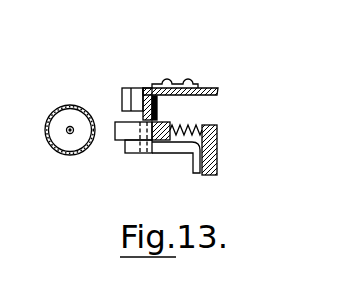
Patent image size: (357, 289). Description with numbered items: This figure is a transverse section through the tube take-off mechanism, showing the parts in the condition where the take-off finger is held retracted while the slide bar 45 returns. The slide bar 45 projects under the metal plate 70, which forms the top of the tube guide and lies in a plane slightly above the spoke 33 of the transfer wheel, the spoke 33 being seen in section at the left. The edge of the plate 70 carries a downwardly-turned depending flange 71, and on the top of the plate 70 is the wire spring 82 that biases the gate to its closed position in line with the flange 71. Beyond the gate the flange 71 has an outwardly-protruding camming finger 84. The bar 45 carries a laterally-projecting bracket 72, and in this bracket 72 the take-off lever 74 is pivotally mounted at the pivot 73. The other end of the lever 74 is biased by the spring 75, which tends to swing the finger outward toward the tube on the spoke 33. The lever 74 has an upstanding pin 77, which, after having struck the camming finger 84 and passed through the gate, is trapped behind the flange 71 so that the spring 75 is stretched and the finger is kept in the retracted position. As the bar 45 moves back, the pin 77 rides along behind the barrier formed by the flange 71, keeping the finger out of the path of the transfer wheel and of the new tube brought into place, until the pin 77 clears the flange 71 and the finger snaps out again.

The spoke 33 is at (67, 133).
The depending flange 71 is at (145, 117).
The camming finger 84 is at (125, 88).
The plate 70 is at (212, 88).
The wire spring 82 is at (183, 83).
The pin 77 is at (157, 108).
The take-off lever 74 is at (119, 138).
The pivot 73 is at (143, 153).
The spring 75 is at (192, 123).
The bracket 72 is at (178, 149).
The slide bar 45 is at (218, 155).